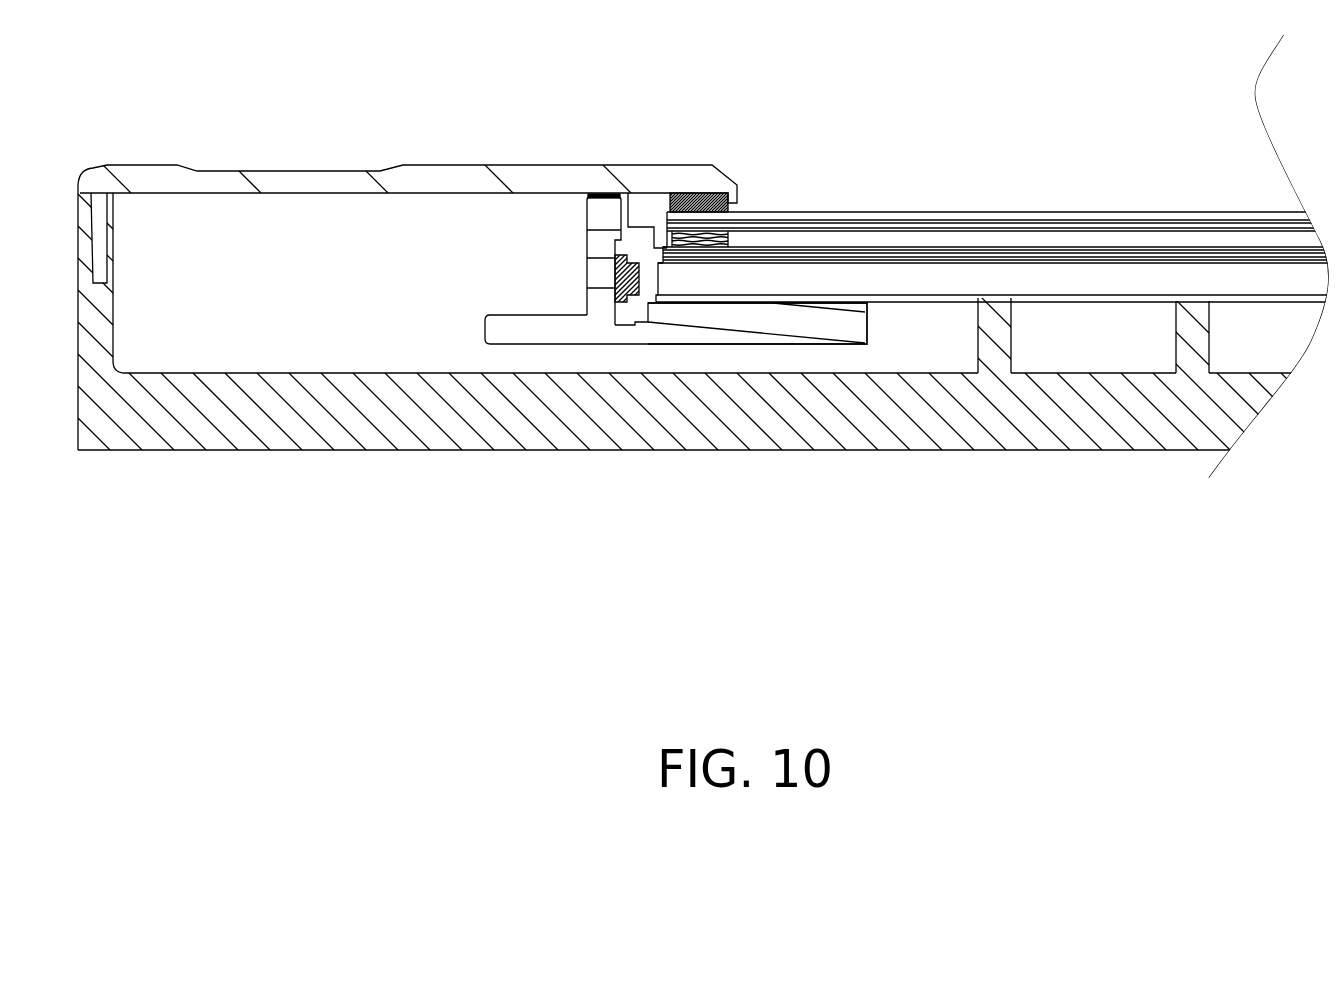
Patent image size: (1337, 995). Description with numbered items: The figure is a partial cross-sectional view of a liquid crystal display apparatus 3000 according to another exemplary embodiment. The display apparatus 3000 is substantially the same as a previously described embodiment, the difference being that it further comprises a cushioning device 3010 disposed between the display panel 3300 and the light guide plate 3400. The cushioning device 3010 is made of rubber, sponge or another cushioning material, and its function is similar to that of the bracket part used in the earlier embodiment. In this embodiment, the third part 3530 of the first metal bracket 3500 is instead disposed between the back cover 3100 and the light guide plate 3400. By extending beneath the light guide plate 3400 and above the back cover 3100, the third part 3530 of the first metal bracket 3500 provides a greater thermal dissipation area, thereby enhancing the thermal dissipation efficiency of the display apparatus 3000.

The display apparatus 3000 is at (1300, 663).
The cushioning device 3010 is at (703, 243).
The back cover 3100 is at (1023, 422).
The display panel 3300 is at (935, 222).
The light guide plate 3400 is at (1078, 282).
The first metal bracket 3500 is at (603, 330).
The third part 3530 is at (767, 330).